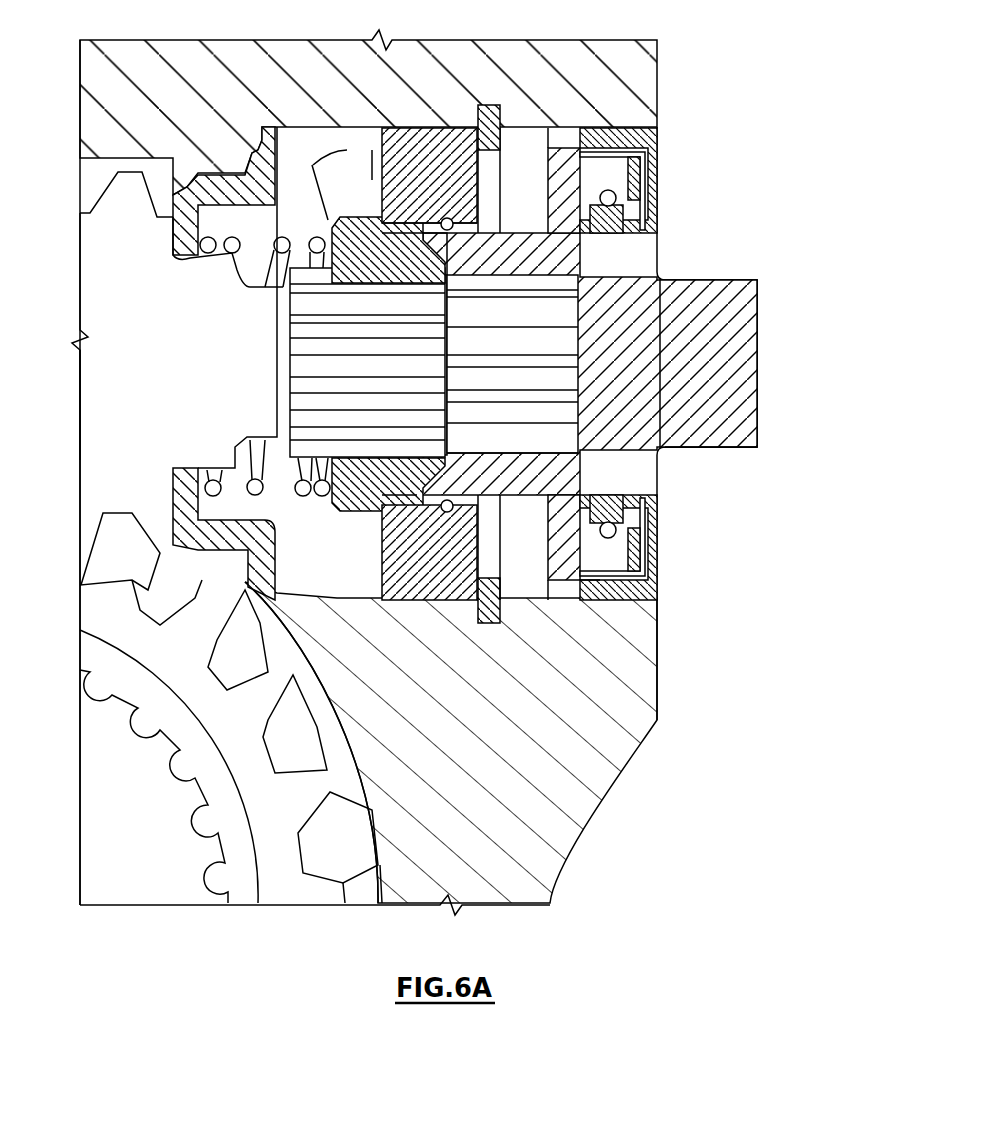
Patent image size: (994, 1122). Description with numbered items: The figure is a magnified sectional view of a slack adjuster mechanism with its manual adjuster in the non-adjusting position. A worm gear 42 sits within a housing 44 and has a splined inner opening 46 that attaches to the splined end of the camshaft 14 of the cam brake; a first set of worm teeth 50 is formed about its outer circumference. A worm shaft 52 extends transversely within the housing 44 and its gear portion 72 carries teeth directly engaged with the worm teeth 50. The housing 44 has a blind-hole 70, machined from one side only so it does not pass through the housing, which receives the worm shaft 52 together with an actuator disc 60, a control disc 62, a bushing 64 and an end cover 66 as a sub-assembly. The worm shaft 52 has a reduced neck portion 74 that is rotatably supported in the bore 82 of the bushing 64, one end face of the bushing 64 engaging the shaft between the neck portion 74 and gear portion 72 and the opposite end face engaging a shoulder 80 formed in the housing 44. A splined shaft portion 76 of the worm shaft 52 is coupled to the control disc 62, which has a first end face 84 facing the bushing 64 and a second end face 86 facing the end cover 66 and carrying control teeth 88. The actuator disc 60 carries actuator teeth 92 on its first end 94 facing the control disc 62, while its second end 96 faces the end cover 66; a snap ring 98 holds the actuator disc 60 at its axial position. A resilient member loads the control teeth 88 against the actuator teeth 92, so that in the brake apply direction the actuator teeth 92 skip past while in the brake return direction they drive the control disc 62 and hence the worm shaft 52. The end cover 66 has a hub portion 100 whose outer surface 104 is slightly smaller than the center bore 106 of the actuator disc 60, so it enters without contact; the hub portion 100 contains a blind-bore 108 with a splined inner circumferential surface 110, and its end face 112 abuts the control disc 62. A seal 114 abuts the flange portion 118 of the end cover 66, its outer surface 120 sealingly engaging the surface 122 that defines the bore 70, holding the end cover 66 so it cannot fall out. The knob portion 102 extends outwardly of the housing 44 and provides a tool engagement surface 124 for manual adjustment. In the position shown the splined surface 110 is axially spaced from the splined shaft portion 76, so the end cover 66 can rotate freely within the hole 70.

The camshaft 14 is at (138, 885).
The worm gear 42 is at (218, 736).
The housing 44 is at (492, 50).
The splined inner opening 46 is at (225, 860).
The first set of worm teeth 50 is at (358, 725).
The worm shaft 52 is at (111, 389).
The actuator disc 60 is at (454, 571).
The control disc 62 is at (374, 501).
The bushing 64 is at (218, 192).
The end cover 66 is at (638, 384).
The blind-hole 70 is at (452, 600).
The gear portion 72 is at (102, 465).
The reduced neck portion 74 is at (202, 267).
The splined shaft portion 76 is at (370, 307).
The shoulder 80 is at (250, 153).
The bore 82 is at (193, 467).
The first end face 84 is at (312, 165).
The second end face 86 is at (427, 260).
The control teeth 88 is at (395, 223).
The actuator teeth 92 is at (385, 222).
The first end 94 is at (372, 150).
The second end 96 is at (503, 600).
The snap ring 98 is at (488, 105).
The hub portion 100 is at (527, 600).
The knob portion 102 is at (728, 320).
The outer surface 104 is at (528, 230).
The center bore 106 is at (453, 222).
The blind-bore 108 is at (556, 453).
The splined inner circumferential surface 110 is at (535, 347).
The end face 112 is at (445, 505).
The seal 114 is at (647, 512).
The flange portion 118 is at (563, 188).
The outer surface 120 is at (590, 138).
The surface 122 is at (563, 600).
The tool engagement surface 124 is at (736, 448).